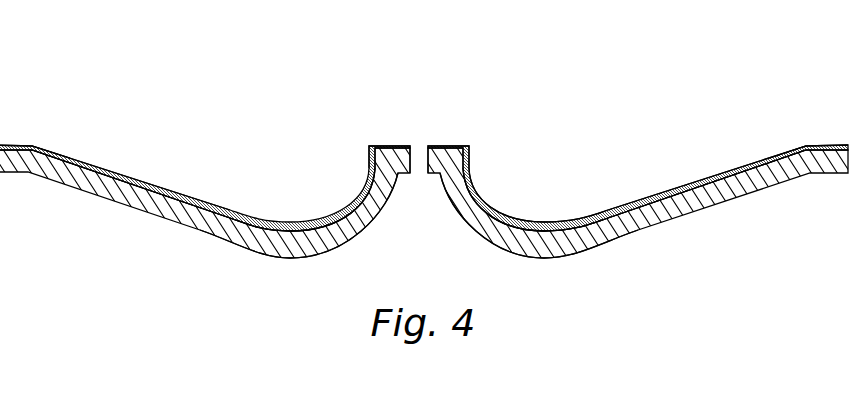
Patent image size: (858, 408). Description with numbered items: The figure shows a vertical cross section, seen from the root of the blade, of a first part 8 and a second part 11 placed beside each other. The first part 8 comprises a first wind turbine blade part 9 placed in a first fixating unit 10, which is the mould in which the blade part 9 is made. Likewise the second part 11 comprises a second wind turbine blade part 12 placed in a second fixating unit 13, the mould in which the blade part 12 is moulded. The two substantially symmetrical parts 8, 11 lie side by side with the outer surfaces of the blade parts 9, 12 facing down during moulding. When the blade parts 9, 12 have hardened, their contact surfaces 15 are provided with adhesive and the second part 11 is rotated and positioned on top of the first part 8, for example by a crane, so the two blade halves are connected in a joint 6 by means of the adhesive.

The joint 6 is at (0, 212).
The first part 8 is at (638, 290).
The first wind turbine blade part 9 is at (538, 224).
The first fixating unit 10 is at (691, 203).
The second part 11 is at (172, 274).
The second wind turbine blade part 12 is at (189, 196).
The second fixating unit 13 is at (290, 247).
The contact surfaces 15 is at (4, 144).